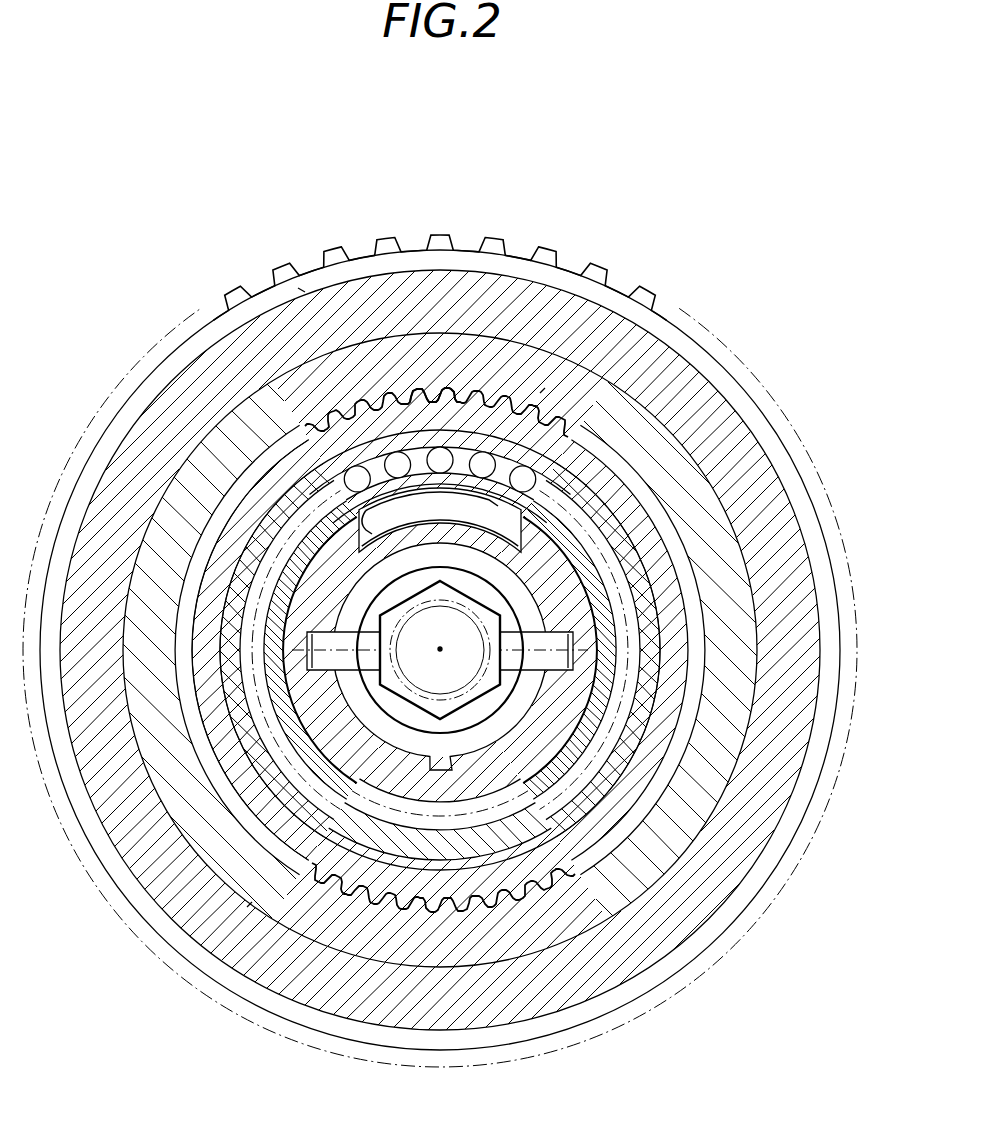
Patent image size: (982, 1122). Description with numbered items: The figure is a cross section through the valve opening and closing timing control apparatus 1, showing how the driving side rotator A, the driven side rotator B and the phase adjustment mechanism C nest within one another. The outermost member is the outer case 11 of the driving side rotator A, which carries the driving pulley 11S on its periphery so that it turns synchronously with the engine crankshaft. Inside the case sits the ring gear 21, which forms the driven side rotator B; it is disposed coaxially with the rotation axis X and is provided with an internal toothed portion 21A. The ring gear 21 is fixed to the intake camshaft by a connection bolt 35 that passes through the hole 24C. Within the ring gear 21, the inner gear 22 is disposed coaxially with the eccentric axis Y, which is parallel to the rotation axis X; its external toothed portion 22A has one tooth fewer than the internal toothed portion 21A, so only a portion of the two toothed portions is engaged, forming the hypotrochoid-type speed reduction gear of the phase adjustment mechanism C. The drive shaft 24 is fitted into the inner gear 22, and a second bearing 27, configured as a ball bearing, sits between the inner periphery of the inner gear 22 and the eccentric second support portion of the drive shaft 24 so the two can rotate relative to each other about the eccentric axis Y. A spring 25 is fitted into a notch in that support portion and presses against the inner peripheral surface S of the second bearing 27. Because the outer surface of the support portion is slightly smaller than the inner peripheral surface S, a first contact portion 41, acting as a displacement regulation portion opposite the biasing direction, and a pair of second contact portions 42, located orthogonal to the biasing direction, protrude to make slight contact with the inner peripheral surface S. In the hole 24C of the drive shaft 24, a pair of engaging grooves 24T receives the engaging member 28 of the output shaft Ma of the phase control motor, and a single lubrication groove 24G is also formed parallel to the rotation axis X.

The valve opening and closing timing control apparatus 1 is at (518, 222).
The outer case 11 is at (173, 378).
The driving pulley 11S is at (392, 232).
The ring gear 21 is at (347, 942).
The internal toothed portion 21A is at (455, 390).
The inner gear 22 is at (677, 600).
The external toothed portion 22A is at (372, 392).
The spring 25 is at (430, 395).
The second bearing 27 is at (200, 612).
The second contact portions 42 is at (282, 648).
The drive shaft 24 is at (525, 748).
The engaging grooves 24T is at (277, 683).
The hole 24C is at (255, 755).
The lubrication groove 24G is at (440, 651).
The engaging member 28 is at (390, 733).
The connection bolt 35 is at (436, 695).
The first contact portion 41 is at (442, 835).
The output shaft Ma is at (459, 692).
The inner peripheral surface S is at (560, 585).
The rotation axis X is at (440, 651).
The eccentric axis Y is at (343, 651).
The driving side rotator A is at (305, 292).
The driven side rotator B is at (247, 907).
The phase adjustment mechanism C is at (540, 393).